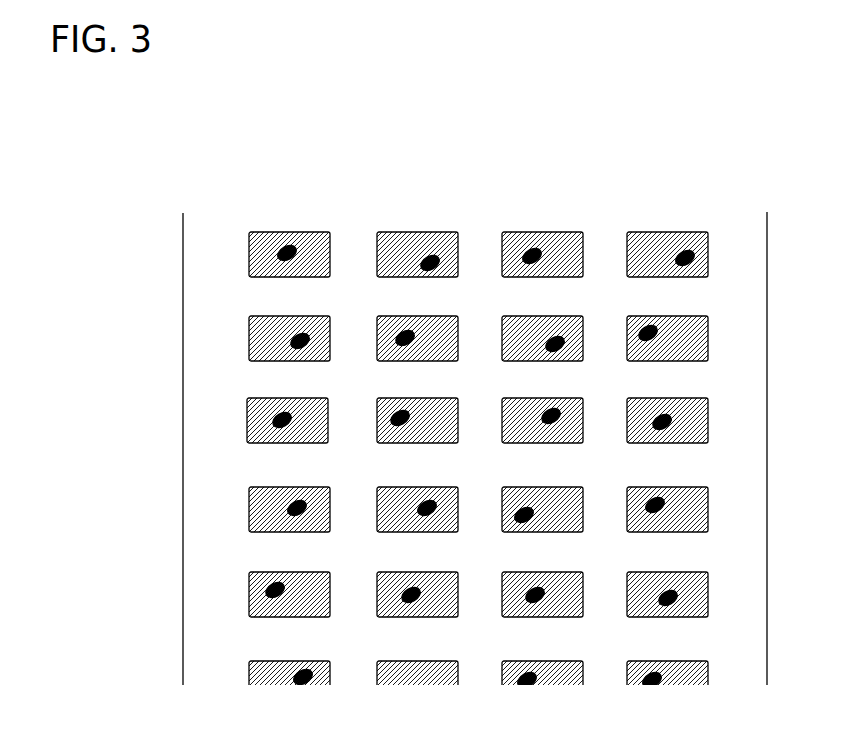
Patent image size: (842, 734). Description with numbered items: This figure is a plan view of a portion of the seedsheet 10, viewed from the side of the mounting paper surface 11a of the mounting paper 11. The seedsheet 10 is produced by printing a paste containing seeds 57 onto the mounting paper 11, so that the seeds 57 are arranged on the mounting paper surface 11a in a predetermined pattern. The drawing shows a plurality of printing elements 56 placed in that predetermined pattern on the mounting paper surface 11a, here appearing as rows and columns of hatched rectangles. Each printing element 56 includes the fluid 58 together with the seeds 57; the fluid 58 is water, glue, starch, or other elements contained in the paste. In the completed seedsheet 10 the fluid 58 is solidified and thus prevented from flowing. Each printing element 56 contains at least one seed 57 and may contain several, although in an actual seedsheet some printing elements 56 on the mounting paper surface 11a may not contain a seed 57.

The seedsheet 10 is at (354, 198).
The mounting paper 11 is at (232, 472).
The mounting paper surface 11a is at (237, 548).
The printing element 56 is at (321, 409).
The seed 57 is at (277, 418).
The fluid 58 is at (247, 404).